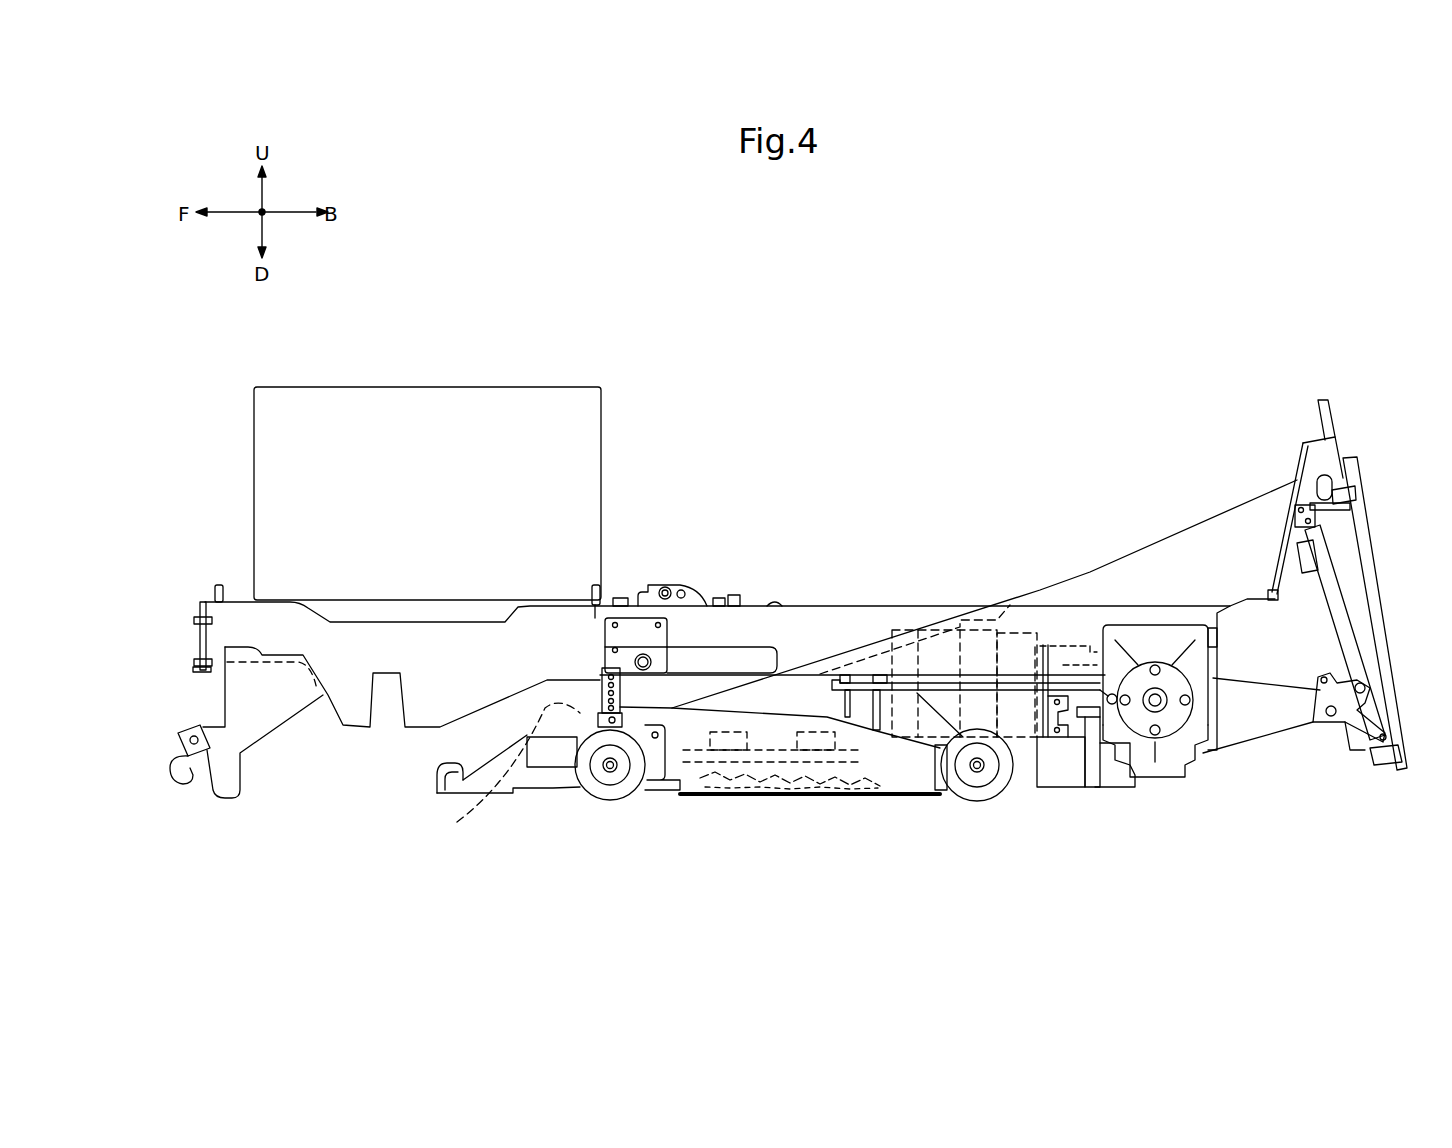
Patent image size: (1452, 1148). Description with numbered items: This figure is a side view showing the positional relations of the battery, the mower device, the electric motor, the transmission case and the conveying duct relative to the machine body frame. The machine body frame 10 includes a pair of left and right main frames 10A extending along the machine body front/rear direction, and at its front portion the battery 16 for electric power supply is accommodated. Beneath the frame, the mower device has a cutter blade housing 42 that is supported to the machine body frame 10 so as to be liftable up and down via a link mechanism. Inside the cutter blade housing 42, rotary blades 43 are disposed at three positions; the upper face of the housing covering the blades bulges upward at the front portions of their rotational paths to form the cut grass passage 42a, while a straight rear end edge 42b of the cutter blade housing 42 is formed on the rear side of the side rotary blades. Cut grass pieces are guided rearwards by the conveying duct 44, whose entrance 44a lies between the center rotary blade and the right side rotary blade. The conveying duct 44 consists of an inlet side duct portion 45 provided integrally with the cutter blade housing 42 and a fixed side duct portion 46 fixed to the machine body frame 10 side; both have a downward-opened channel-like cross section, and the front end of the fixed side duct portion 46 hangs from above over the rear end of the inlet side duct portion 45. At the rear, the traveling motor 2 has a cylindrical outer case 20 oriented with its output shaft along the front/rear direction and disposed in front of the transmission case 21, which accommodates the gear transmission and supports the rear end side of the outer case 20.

The battery 16 is at (404, 399).
The main frame 10A is at (475, 637).
The machine body frame 10 is at (724, 671).
The inlet side duct portion 45 is at (777, 690).
The fixed side duct portion 46 is at (1190, 540).
The conveying duct 44 is at (951, 660).
The entrance of the conveying duct 44a is at (728, 704).
The cutter blade housing 42 is at (782, 755).
The cut grass passage 42a is at (513, 780).
The rear end edge of the cutter blade housing 42b is at (960, 793).
The rotary blades 43 is at (772, 803).
The outer case 20 is at (1022, 713).
The traveling motor 2 is at (1061, 755).
The transmission case 21 is at (1130, 790).